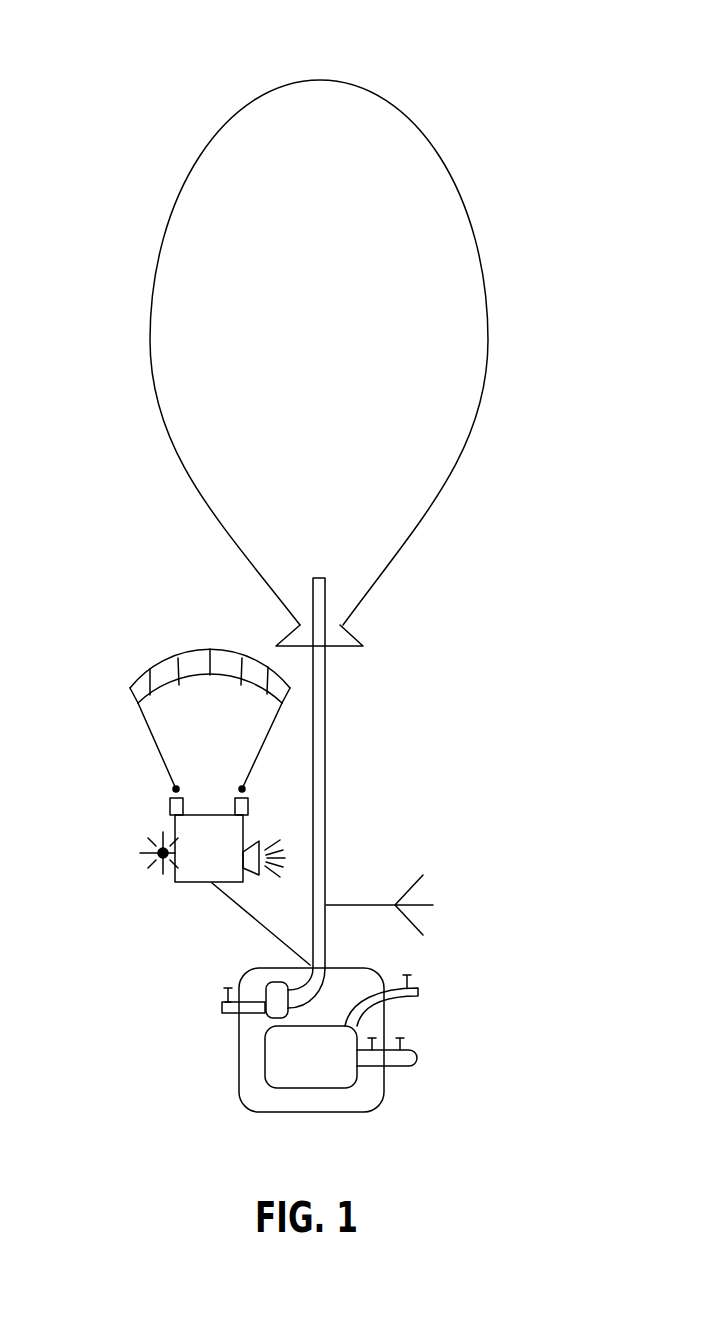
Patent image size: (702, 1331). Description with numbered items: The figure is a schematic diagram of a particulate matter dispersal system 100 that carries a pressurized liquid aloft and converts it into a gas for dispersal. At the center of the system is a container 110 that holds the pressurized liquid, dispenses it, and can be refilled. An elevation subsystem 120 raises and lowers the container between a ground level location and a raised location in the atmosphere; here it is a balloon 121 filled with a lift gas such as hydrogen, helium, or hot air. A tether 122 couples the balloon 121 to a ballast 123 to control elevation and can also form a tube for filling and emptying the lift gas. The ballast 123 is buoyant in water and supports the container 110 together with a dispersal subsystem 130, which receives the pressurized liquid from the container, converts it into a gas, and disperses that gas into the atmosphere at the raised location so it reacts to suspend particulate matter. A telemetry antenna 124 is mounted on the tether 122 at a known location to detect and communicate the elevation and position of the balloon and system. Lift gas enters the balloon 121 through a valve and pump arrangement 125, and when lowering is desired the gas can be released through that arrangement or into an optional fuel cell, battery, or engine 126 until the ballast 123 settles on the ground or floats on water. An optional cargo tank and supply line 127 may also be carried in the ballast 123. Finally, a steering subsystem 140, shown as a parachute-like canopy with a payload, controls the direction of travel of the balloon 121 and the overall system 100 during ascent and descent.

The particulate matter dispersal system 100 is at (128, 62).
The container 110 is at (347, 1082).
The elevation subsystem 120 is at (222, 617).
The balloon 121 is at (486, 287).
The tether 122 is at (326, 707).
The ballast 123 is at (239, 1097).
The telemetry antenna 124 is at (418, 884).
The valve and pump arrangement 125 is at (224, 988).
The fuel cell, battery, and/or engine 126 is at (277, 983).
The cargo tank and supply line 127 is at (418, 993).
The dispersal subsystem 130 is at (402, 1073).
The steering subsystem 140 is at (143, 753).